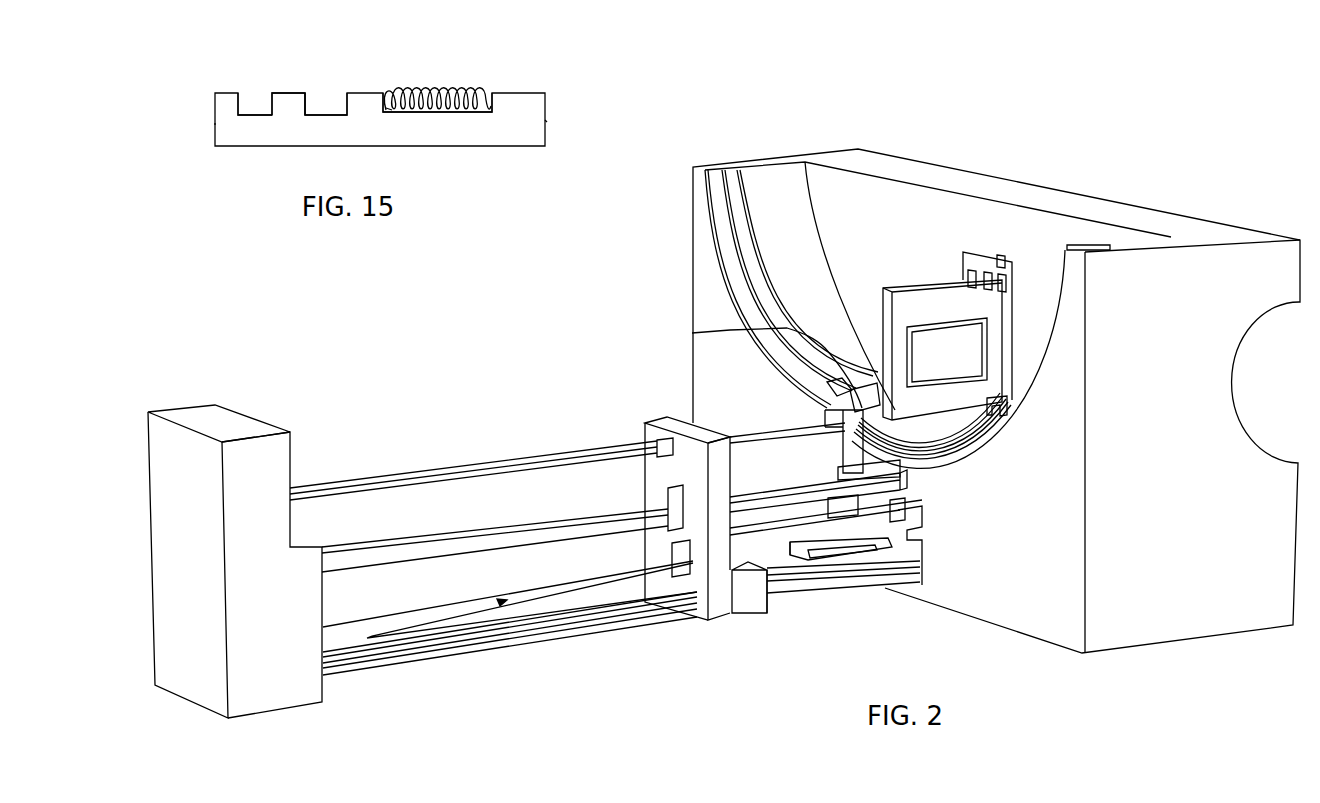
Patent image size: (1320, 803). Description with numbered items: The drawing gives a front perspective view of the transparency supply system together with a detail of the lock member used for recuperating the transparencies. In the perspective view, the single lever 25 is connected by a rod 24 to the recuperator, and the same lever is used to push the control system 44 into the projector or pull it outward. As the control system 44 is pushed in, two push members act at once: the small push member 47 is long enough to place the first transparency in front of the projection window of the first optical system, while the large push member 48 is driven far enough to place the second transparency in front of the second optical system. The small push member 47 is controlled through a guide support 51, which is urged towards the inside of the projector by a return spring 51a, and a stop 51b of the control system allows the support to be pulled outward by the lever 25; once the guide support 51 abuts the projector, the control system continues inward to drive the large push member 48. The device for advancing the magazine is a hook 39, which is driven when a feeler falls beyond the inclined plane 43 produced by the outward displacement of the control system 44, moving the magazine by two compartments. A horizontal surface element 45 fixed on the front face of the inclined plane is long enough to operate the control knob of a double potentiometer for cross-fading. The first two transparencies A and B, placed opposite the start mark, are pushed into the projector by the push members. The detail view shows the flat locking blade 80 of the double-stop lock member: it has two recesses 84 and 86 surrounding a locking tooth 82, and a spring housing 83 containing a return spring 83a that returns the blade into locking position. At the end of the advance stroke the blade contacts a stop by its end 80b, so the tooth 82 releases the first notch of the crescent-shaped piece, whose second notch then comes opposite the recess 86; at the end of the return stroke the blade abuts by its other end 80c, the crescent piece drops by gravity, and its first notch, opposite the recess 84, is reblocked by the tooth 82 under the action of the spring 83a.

In FIG. 15, the flat locking blade 80 is at (293, 146).
In FIG. 15, the end of blade 80b is at (545, 122).
In FIG. 15, the end of blade 80c is at (215, 123).
In FIG. 15, the locking tooth 82 is at (288, 92).
In FIG. 15, the recess 84 is at (255, 105).
In FIG. 15, the recess 86 is at (330, 105).
In FIG. 15, the spring housing 83 is at (488, 84).
In FIG. 15, the return spring 83a is at (408, 85).
In FIG. 2, the single lever 25 is at (213, 427).
In FIG. 2, the large push member 48 is at (417, 480).
In FIG. 2, the rod 24 is at (478, 540).
In FIG. 2, the control system 44 is at (336, 640).
In FIG. 2, the inclined plane 43 is at (577, 598).
In FIG. 2, the horizontal surface element 45 is at (872, 543).
In FIG. 2, the small push member 47 is at (765, 437).
In FIG. 2, the guide support 51 is at (720, 580).
In FIG. 2, the return spring 51a is at (848, 540).
In FIG. 2, the stop 51b is at (773, 594).
In FIG. 2, the hook 39 is at (692, 333).
In FIG. 2, the transparency A is at (922, 285).
In FIG. 2, the transparency B is at (883, 288).